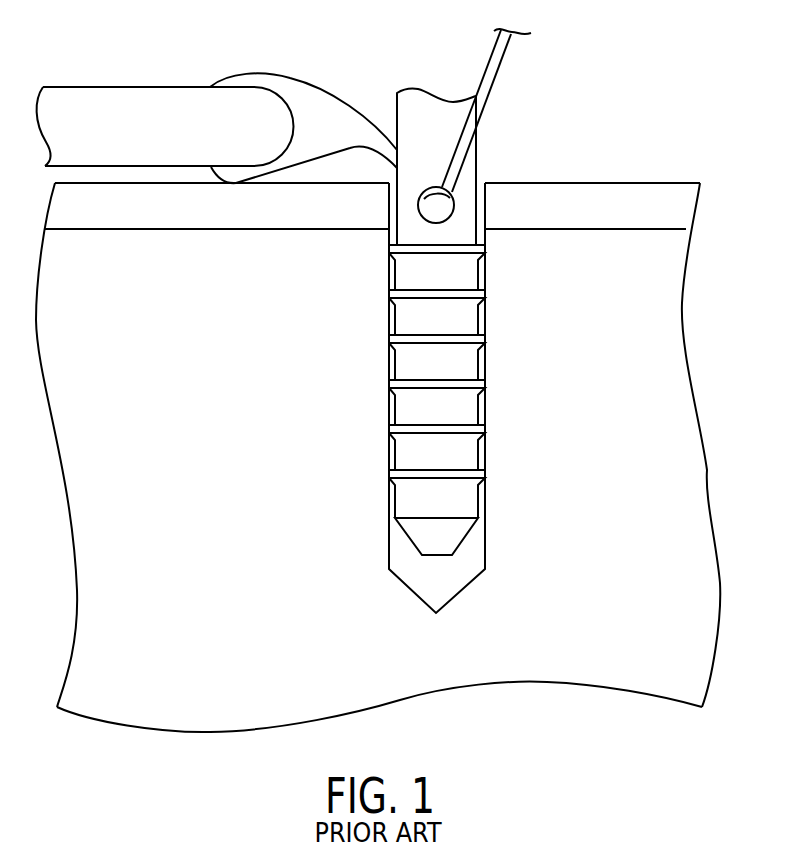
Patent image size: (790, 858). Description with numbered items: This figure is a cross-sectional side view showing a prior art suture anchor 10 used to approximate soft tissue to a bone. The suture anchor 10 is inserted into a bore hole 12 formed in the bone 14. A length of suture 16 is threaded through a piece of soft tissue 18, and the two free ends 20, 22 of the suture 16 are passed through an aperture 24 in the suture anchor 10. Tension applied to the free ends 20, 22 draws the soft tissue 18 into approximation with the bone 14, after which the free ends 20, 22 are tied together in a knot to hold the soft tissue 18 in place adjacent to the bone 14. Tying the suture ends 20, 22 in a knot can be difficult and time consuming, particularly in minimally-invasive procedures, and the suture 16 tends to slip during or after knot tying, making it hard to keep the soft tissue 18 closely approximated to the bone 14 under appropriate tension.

The suture anchor 10 is at (605, 139).
The bore hole 12 is at (457, 578).
The bone 14 is at (219, 329).
The suture 16 is at (268, 72).
The soft tissue 18 is at (88, 101).
The free end 20 is at (496, 148).
The free end 22 is at (491, 72).
The aperture 24 is at (453, 207).